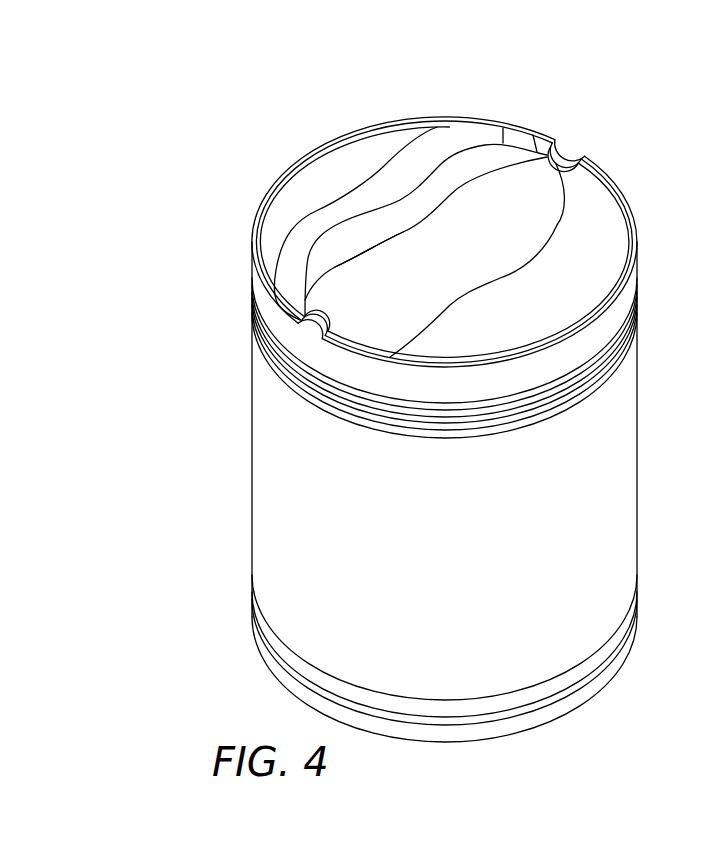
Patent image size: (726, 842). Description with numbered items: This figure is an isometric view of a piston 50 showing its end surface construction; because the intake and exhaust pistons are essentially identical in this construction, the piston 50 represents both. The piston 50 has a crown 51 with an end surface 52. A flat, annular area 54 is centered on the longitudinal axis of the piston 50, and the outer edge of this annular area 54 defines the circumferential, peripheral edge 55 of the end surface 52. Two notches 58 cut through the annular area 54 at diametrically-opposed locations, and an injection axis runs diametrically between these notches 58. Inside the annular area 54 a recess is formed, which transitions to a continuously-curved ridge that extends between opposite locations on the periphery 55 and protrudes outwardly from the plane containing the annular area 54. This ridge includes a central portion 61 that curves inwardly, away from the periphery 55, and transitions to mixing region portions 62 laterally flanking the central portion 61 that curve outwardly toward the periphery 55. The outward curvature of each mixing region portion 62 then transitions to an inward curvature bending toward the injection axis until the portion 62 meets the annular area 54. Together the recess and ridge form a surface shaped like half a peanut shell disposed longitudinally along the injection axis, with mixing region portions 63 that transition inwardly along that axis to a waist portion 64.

The piston 50 is at (660, 467).
The crown 51 is at (630, 309).
The end surface 52 is at (506, 116).
The flat annular area 54 is at (390, 120).
The peripheral edge 55 is at (410, 118).
The notches 58 is at (570, 162).
The central portion 61 is at (393, 192).
The mixing region portions 62 is at (447, 133).
The mixing region portions 63 is at (519, 208).
The waist portion 64 is at (403, 252).